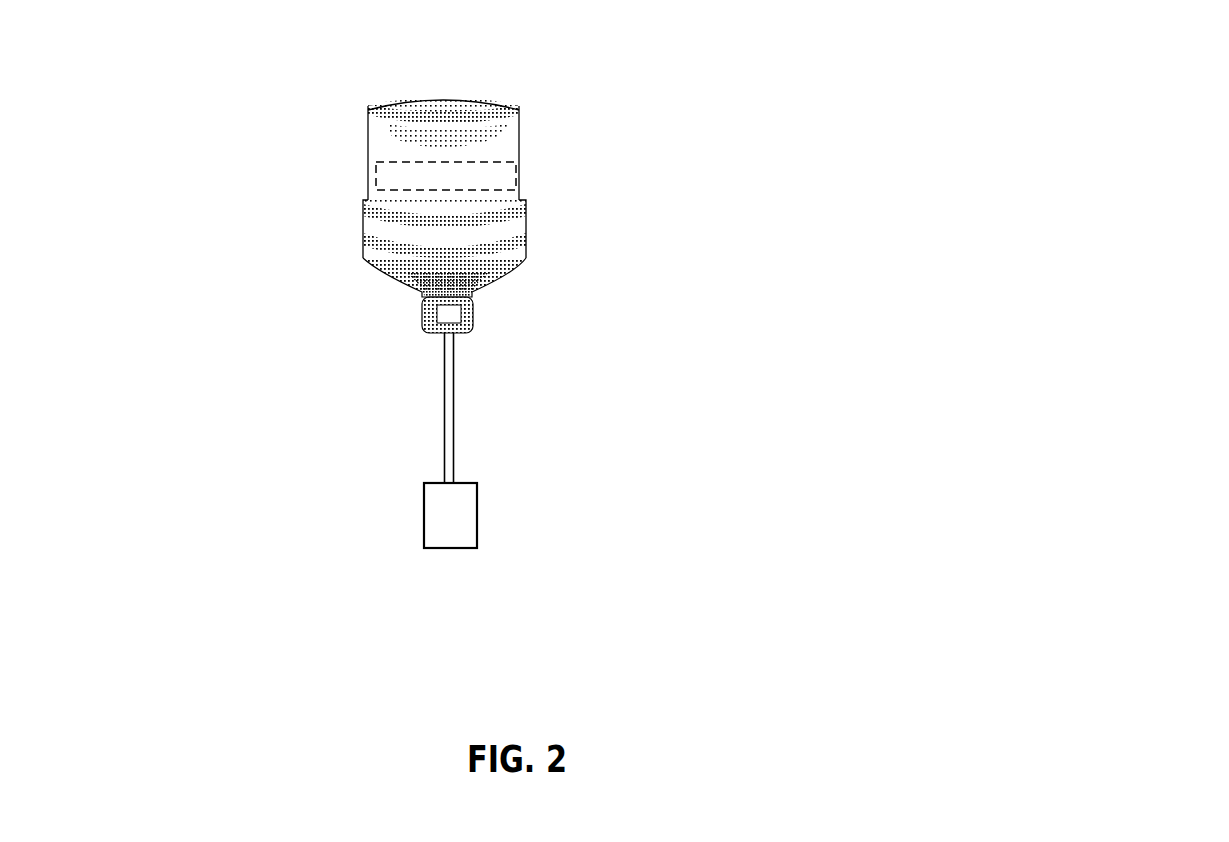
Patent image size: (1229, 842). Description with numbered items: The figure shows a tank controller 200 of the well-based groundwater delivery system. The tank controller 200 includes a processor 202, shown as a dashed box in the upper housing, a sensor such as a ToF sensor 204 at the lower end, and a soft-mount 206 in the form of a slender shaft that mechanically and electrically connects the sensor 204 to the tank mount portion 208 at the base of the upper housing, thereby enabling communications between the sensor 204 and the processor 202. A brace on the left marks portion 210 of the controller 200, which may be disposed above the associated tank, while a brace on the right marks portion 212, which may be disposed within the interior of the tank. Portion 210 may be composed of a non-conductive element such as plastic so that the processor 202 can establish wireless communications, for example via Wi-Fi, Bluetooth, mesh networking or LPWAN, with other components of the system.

The tank controller 200 is at (1183, 284).
The processor 202 is at (515, 175).
The ToF sensor 204 is at (443, 536).
The soft-mount 206 is at (443, 412).
The tank mount portion 208 is at (467, 297).
The portion disposed above tank 210 is at (479, 171).
The portion disposed within tank 212 is at (391, 398).